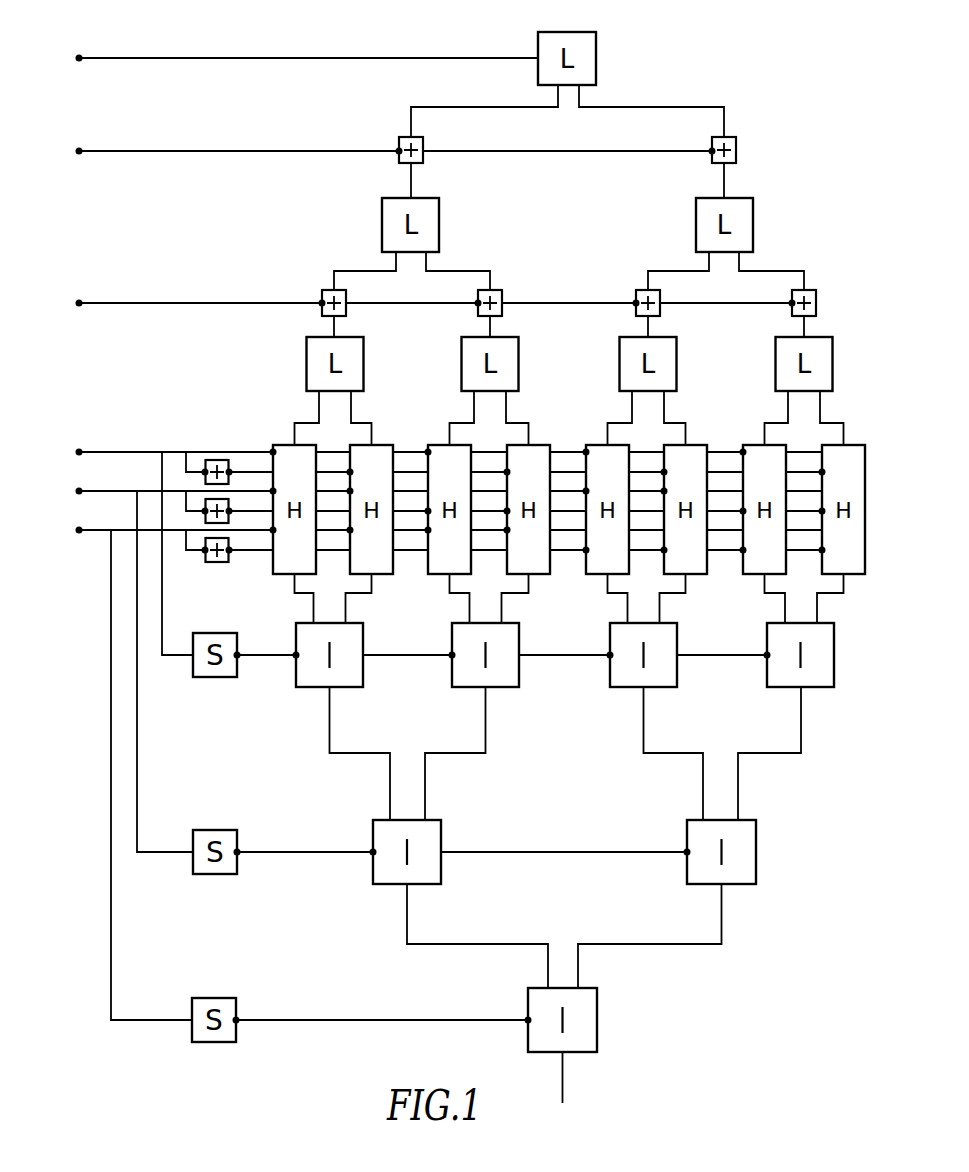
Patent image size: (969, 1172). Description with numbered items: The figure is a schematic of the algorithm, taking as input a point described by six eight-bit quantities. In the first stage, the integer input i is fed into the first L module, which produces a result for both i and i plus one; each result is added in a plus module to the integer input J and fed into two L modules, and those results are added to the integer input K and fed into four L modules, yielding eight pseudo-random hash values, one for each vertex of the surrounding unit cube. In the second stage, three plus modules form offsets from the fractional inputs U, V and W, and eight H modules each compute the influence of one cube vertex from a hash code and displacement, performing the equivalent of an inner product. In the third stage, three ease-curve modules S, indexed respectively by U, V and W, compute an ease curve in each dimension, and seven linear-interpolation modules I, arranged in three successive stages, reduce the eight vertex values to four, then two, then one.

The integer input i is at (292, 58).
The integer input j J is at (379, 151).
The integer input k K is at (419, 303).
The fractional input u U is at (159, 545).
The fractional input v V is at (159, 663).
The fractional input w W is at (159, 767).